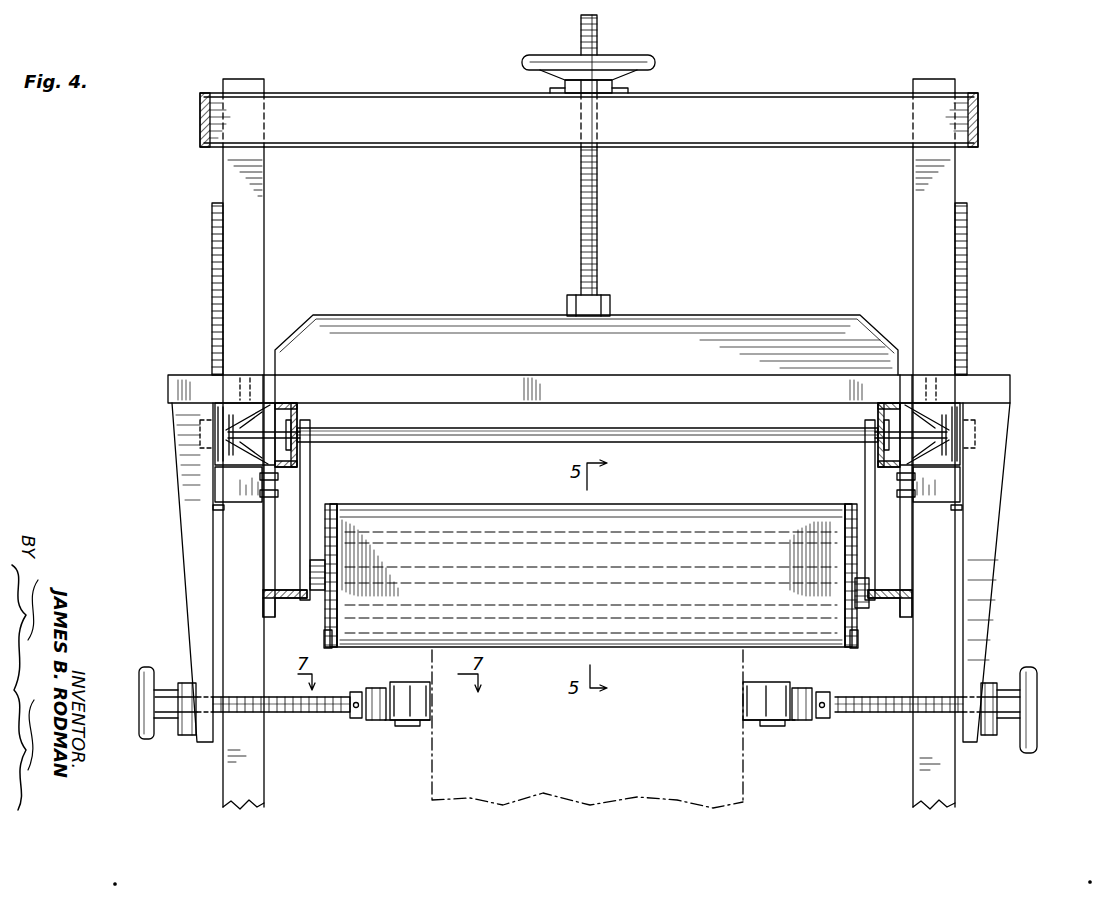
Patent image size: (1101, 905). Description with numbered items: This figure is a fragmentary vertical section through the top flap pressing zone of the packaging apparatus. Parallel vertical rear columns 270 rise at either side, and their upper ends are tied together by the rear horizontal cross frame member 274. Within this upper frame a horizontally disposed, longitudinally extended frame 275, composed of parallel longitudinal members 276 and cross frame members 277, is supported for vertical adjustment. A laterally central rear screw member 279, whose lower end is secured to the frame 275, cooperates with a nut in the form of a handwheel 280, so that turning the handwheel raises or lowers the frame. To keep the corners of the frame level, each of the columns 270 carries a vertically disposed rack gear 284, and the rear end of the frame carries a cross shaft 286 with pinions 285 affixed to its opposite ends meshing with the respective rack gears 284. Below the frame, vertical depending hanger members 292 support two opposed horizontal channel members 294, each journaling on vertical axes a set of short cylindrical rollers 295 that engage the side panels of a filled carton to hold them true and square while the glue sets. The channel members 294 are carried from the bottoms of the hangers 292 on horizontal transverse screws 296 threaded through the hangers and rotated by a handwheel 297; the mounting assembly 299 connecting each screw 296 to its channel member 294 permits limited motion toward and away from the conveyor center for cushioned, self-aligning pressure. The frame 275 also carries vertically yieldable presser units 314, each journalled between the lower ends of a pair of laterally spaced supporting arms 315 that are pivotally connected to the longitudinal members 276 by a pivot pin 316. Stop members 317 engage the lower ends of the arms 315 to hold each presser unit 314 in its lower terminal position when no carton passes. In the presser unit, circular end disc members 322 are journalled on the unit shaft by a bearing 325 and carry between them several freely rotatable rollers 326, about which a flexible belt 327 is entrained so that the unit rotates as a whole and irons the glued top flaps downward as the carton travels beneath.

The rear columns 270 is at (264, 217).
The rear horizontal cross frame member 274 is at (826, 96).
The frame 275 is at (779, 309).
The longitudinal members 276 is at (297, 412).
The cross frame members 277 is at (722, 372).
The rear screw member 279 is at (597, 200).
The handwheel 280 is at (655, 63).
The rack gear 284 is at (212, 264).
The pinions 285 is at (217, 427).
The cross shaft 286 is at (252, 400).
The hanger members 292 is at (185, 505).
The channel members 294 is at (392, 720).
The rollers 295 is at (415, 705).
The screws 296 is at (305, 712).
The handwheel 297 is at (150, 667).
The mounting assembly 299 is at (364, 743).
The presser unit 314 is at (502, 500).
The supporting arms 315 is at (310, 486).
The pivot pin 316 is at (715, 442).
The stop members 317 is at (282, 600).
The end disc member 322 is at (324, 640).
The bearing 325 is at (310, 570).
The rollers 326 is at (338, 545).
The belt 327 is at (656, 512).